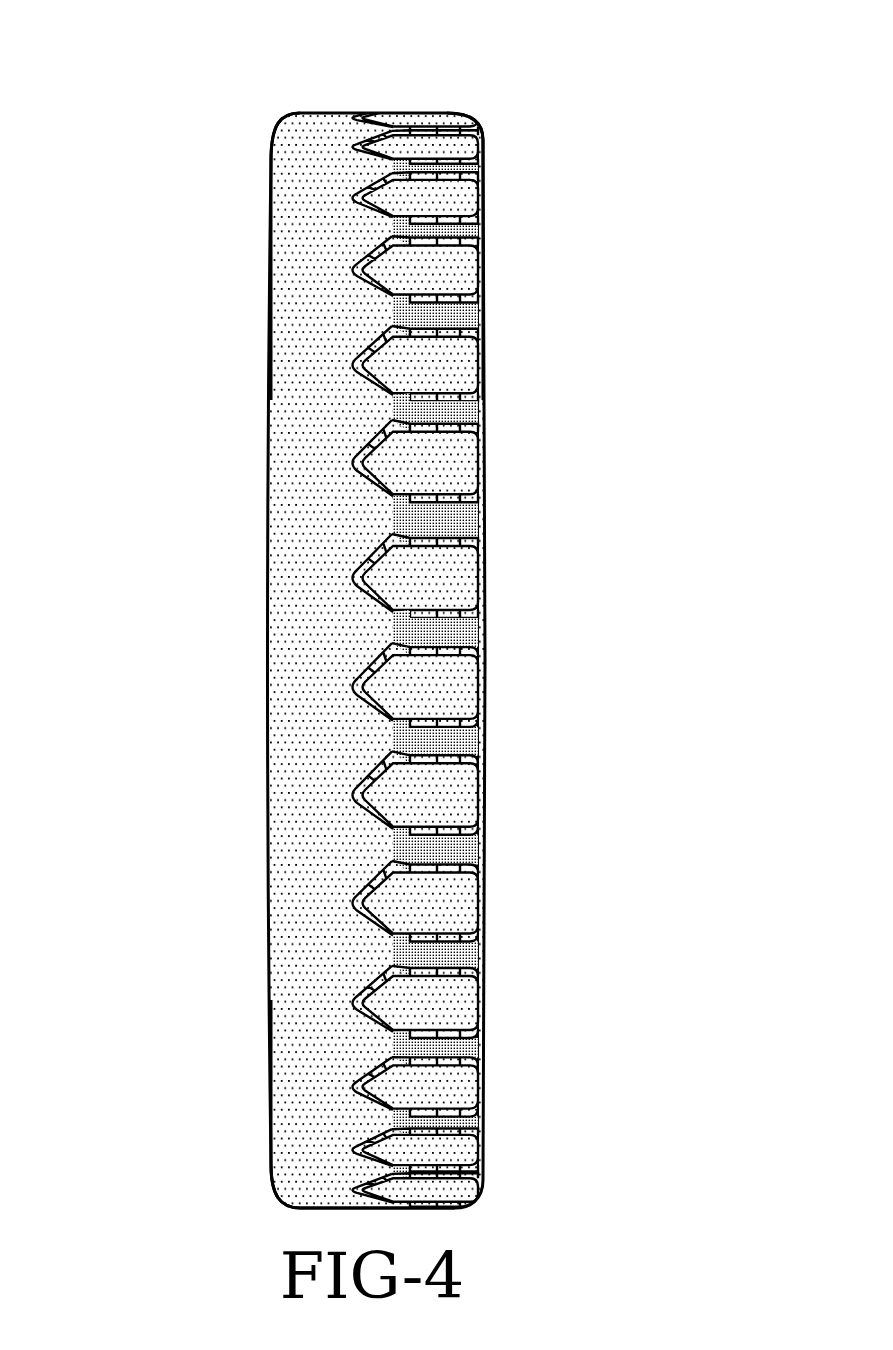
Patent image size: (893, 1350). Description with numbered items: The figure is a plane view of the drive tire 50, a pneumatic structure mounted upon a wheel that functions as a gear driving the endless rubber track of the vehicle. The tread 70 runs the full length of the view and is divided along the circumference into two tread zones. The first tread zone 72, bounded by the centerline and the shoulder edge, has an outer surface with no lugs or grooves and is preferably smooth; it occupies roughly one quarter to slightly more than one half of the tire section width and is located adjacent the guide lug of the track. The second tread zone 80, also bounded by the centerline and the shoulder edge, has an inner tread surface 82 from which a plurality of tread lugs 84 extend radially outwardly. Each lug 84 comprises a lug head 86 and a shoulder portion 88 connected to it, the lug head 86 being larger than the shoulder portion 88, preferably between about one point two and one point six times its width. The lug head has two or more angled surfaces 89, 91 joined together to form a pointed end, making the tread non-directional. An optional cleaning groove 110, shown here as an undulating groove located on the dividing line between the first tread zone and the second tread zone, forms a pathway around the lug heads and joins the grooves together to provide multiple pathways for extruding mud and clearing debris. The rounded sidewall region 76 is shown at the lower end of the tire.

The drive wheel tire 50 is at (259, 660).
The tread 70 is at (388, 100).
The first tread zone 72 is at (268, 106).
The second tread zone 80 is at (484, 106).
The sidewall 76 is at (297, 1176).
The tread lug 84 is at (427, 207).
The inner tread surface 82 is at (430, 430).
The lug head 86 is at (428, 475).
The shoulder portion 88 is at (468, 579).
The angled surface 89 is at (375, 660).
The angled surface 91 is at (370, 718).
The cleaning groove 110 is at (360, 792).